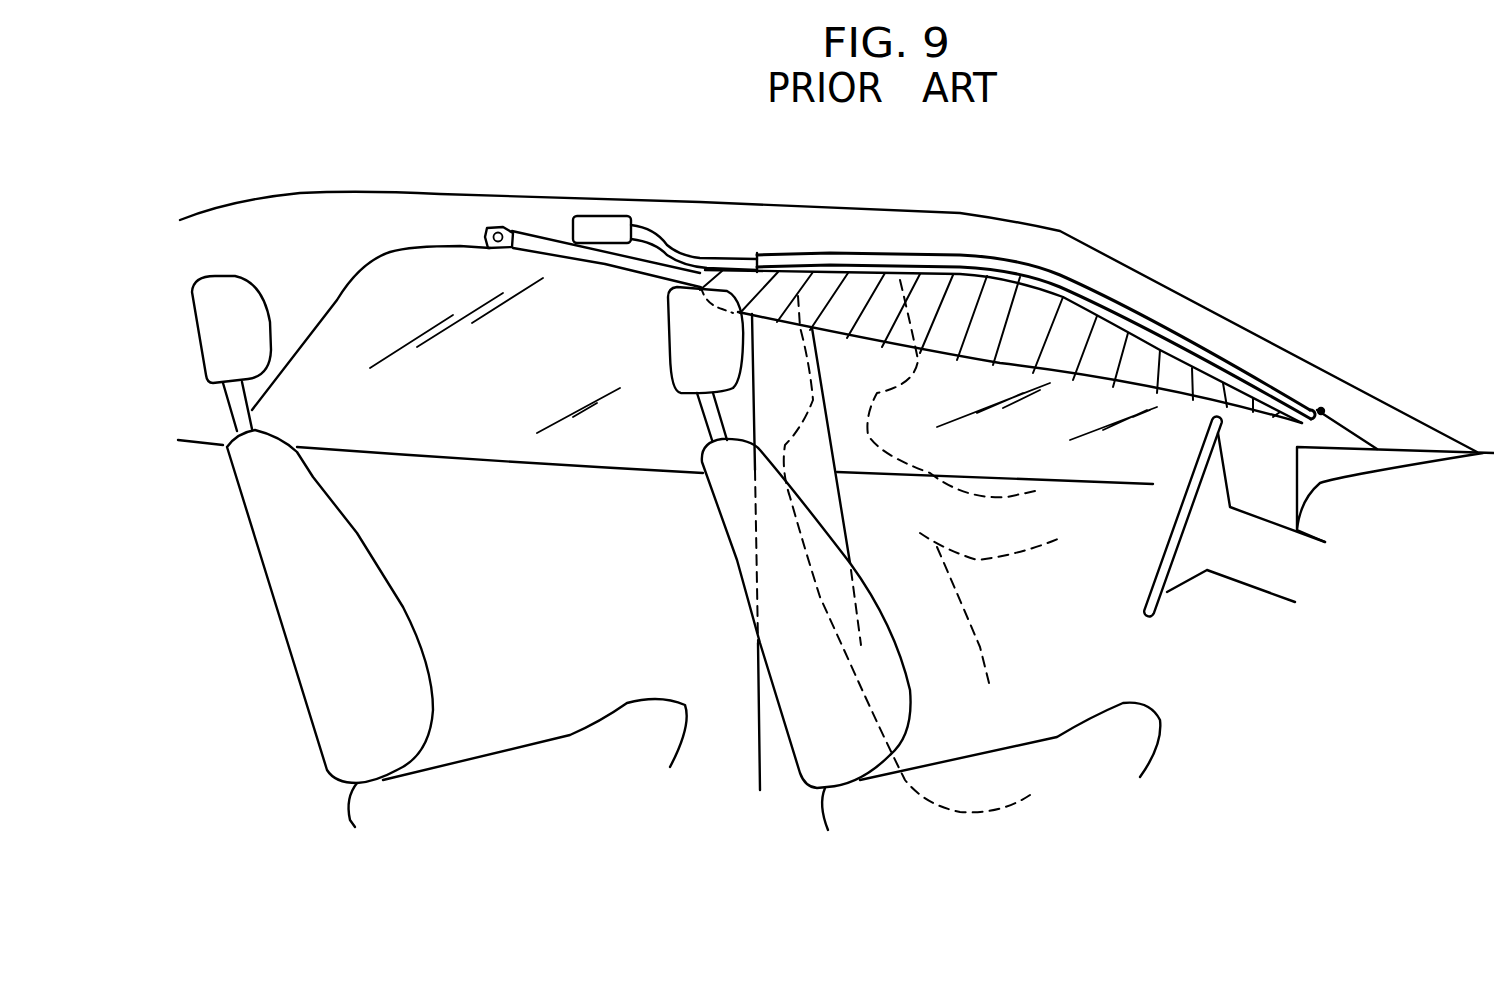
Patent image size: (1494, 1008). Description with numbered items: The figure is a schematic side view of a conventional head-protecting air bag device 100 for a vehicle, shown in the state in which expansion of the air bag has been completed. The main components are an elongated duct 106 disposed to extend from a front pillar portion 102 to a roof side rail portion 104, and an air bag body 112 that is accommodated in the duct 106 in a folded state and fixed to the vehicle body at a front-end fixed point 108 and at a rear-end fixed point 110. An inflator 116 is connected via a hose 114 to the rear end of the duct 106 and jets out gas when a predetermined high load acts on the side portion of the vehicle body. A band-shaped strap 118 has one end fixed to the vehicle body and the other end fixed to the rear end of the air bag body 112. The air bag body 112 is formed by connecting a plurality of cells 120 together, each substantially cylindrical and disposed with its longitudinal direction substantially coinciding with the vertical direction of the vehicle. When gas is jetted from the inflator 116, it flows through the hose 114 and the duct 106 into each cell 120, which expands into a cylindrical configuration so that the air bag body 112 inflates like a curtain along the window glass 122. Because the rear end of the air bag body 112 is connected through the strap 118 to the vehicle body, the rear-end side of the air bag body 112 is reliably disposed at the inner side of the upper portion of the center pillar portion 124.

The head-protecting air bag device 100 is at (1143, 233).
The front pillar portion 102 is at (1233, 328).
The roof side rail portion 104 is at (870, 228).
The duct 106 is at (743, 257).
The front-end fixed point 108 is at (1321, 410).
The rear-end fixed point 110 is at (758, 253).
The air bag body 112 is at (1053, 290).
The hose 114 is at (670, 250).
The inflator 116 is at (603, 223).
The strap 118 is at (528, 233).
The cells 120 is at (985, 300).
The window glass 122 is at (1078, 457).
The center pillar portion 124 is at (768, 387).